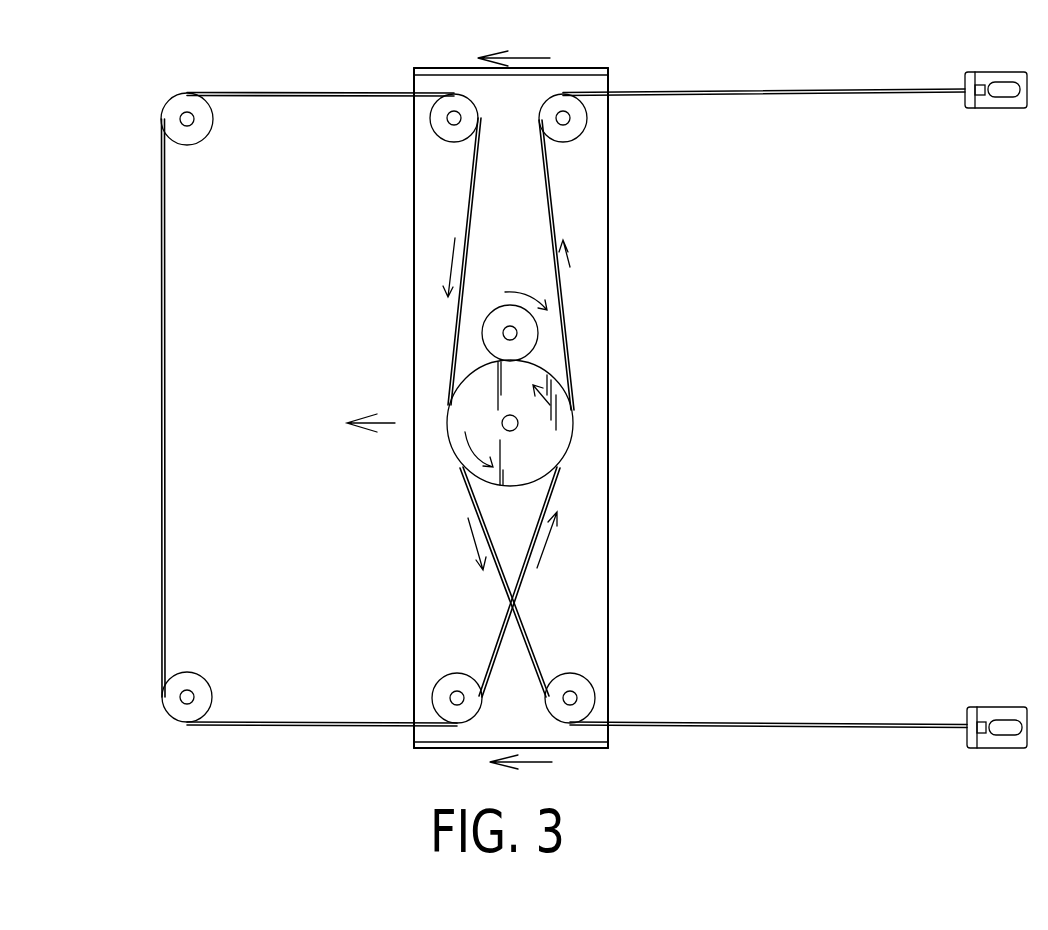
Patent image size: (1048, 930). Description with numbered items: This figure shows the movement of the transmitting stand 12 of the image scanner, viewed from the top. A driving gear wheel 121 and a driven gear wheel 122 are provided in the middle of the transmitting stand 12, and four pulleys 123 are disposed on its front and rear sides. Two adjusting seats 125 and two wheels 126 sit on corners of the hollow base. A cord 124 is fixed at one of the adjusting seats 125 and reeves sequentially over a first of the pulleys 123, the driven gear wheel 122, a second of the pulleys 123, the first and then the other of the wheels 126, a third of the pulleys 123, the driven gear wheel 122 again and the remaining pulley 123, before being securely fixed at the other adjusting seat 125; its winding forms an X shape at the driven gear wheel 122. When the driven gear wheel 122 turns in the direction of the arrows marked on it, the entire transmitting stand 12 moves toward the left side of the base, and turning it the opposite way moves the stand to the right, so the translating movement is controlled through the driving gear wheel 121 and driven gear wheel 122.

The transmitting stand 12 is at (592, 68).
The driving gear wheel 121 is at (530, 330).
The driven gear wheel 122 is at (567, 410).
The pulleys 123 is at (436, 138).
The cord 124 is at (778, 92).
The adjusting seats 125 is at (985, 108).
The wheels 126 is at (200, 137).